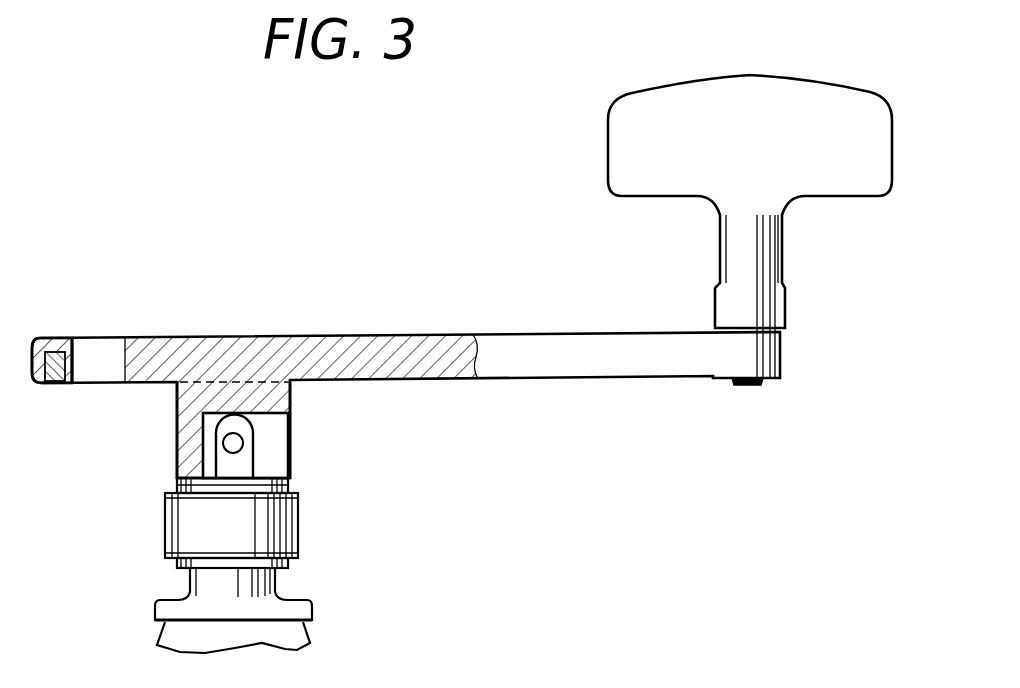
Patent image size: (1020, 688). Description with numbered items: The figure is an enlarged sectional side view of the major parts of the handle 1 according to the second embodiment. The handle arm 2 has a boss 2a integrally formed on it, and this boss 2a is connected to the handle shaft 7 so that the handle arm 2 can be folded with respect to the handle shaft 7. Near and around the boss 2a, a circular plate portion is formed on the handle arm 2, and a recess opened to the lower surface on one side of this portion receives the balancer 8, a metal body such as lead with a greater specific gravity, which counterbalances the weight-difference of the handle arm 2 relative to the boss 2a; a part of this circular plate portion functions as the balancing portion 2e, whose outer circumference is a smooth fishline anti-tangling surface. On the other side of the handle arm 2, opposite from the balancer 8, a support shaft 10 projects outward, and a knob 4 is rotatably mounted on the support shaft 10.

The handle 1 is at (378, 212).
The handle arm 2 is at (422, 333).
The boss 2a is at (176, 456).
The balancing portion 2e is at (63, 350).
The handle knob 4 is at (635, 100).
The handle shaft 7 is at (248, 459).
The balancer 8 is at (57, 384).
The support shaft 10 is at (745, 388).